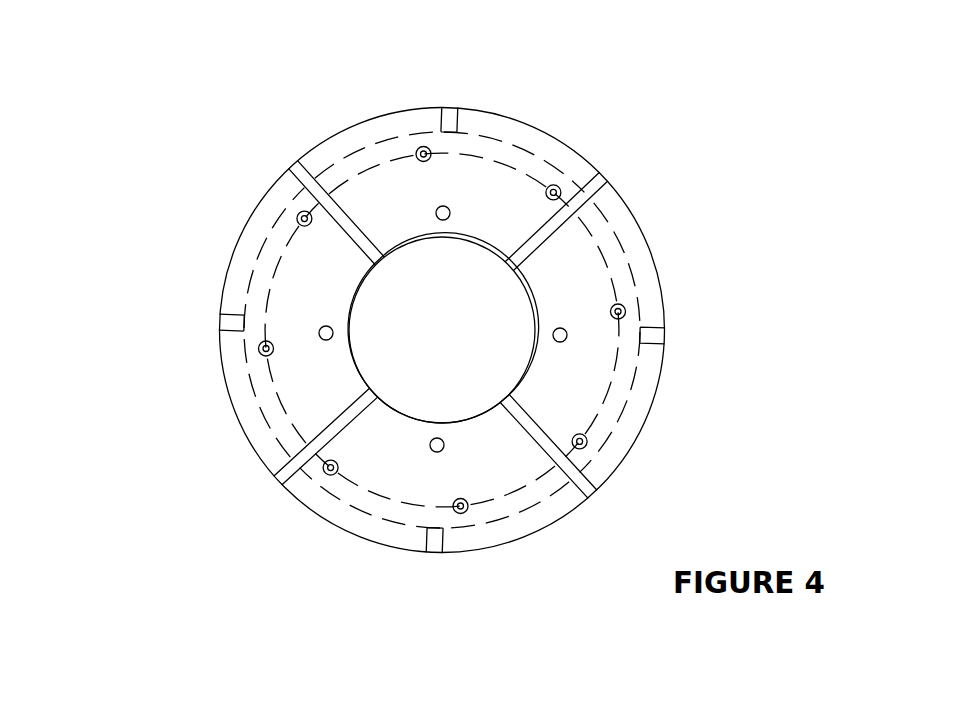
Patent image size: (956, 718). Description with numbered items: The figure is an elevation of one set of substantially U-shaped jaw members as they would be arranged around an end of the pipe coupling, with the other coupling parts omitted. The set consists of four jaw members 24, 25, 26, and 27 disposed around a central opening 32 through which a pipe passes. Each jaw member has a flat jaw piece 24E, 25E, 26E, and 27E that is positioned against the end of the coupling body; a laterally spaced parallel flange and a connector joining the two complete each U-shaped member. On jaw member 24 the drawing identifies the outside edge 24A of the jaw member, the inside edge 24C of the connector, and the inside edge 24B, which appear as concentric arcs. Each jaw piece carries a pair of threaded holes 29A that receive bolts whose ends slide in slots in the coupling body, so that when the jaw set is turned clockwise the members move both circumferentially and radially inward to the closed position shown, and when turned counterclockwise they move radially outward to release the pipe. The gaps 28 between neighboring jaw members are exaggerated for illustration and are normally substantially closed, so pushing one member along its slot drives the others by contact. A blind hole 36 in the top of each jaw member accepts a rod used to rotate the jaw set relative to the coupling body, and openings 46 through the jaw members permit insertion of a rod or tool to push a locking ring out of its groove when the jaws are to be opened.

The jaw member 24 is at (522, 117).
The outside edge of the jaw member 24A is at (562, 137).
The inside edge 24B is at (513, 167).
The inside edge of the connector 24C is at (524, 143).
The flat jaw piece 24E is at (513, 203).
The jaw member 25 is at (672, 238).
The flat jaw piece 25E is at (585, 288).
The jaw member 26 is at (355, 546).
The flat jaw piece 26E is at (415, 476).
The jaw member 27 is at (243, 208).
The flat jaw piece 27E is at (298, 281).
The gaps between jaw members 28 is at (597, 175).
The holes 29A is at (559, 184).
The central opening 32 is at (447, 237).
The blind hole 36 is at (452, 108).
The openings 46 is at (324, 341).